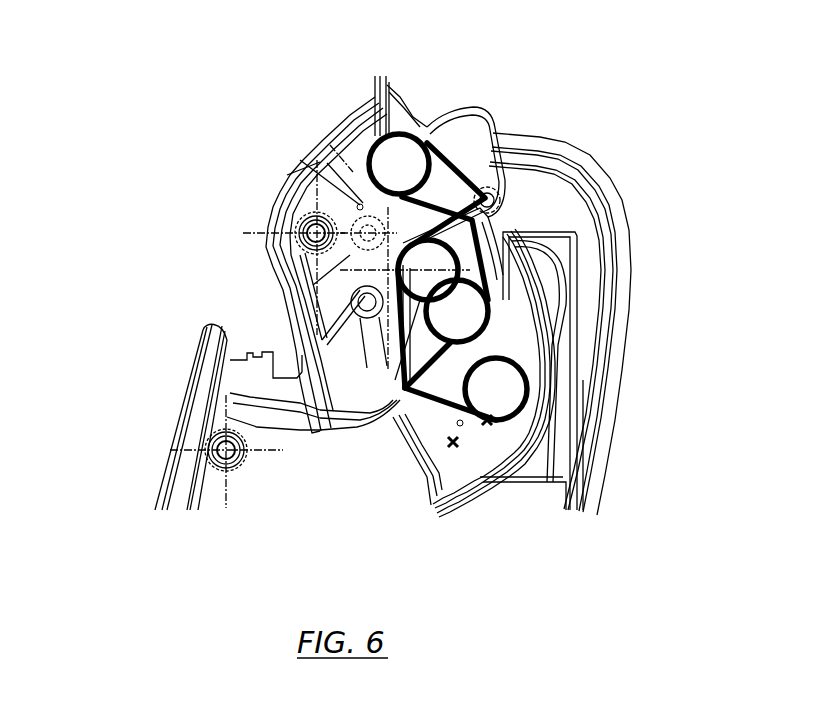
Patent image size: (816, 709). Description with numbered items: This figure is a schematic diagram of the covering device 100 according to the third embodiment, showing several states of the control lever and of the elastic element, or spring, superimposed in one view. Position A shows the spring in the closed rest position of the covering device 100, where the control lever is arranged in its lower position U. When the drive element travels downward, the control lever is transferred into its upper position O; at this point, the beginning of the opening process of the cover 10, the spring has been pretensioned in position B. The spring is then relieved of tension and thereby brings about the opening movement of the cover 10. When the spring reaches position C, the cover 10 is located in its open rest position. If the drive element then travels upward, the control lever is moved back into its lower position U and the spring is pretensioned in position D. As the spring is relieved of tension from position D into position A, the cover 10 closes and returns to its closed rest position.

The covering device 100 is at (456, 589).
The cover 10 is at (223, 372).
The position A is at (490, 312).
The position B is at (368, 160).
The position C is at (403, 258).
The position D is at (528, 384).
The upper position O is at (360, 207).
The lower position U is at (460, 423).